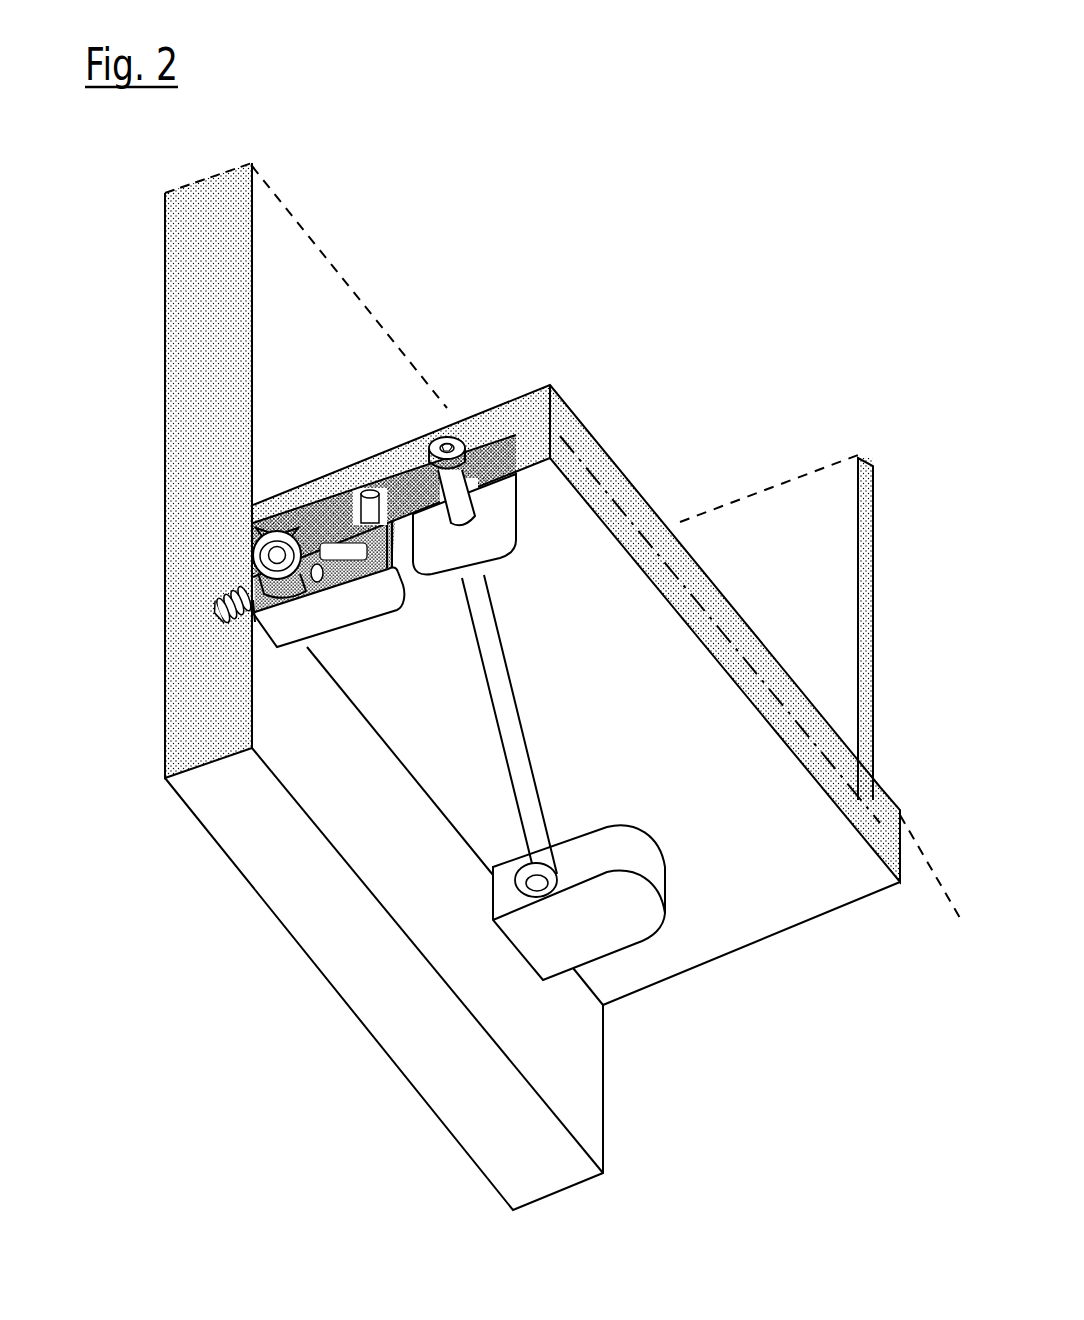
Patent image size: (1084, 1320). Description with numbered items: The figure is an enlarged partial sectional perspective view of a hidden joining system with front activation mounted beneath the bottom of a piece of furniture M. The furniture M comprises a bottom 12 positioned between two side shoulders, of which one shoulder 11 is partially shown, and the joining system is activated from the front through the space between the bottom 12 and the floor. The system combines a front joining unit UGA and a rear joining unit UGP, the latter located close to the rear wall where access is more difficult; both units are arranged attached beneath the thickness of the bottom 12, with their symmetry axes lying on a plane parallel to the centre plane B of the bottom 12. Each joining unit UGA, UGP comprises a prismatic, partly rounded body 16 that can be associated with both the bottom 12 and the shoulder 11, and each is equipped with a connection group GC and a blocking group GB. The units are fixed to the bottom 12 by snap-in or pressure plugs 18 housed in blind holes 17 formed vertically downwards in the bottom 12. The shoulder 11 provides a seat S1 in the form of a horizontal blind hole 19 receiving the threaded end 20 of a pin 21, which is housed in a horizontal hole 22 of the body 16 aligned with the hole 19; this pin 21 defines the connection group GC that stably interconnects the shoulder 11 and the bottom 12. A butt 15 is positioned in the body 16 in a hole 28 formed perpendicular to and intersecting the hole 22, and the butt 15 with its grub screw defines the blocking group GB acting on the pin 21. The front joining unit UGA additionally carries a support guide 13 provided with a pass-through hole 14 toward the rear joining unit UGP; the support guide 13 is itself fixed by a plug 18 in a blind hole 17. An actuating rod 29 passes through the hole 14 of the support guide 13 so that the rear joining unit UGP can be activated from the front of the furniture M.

The side shoulder 11 is at (227, 200).
The bottom 12 is at (833, 893).
The support guide 13 is at (513, 540).
The pass-through hole 14 is at (467, 510).
The butt 15 is at (256, 553).
The body 16 is at (400, 583).
The blind hole 17 is at (267, 520).
The snap-in or pressure plug 18 is at (257, 537).
The horizontal blind hole 19 is at (220, 613).
The threaded end 20 is at (233, 637).
The pin 21 is at (262, 630).
The horizontal hole 22 is at (332, 560).
The hole 28 is at (493, 867).
The actuating rod 29 is at (517, 743).
The furniture M is at (592, 191).
The centre plane B is at (572, 530).
The blocking group GB is at (242, 567).
The connection group GC is at (243, 652).
The seat S1 is at (217, 600).
The front joining unit UGA is at (385, 632).
The rear joining unit UGP is at (645, 963).